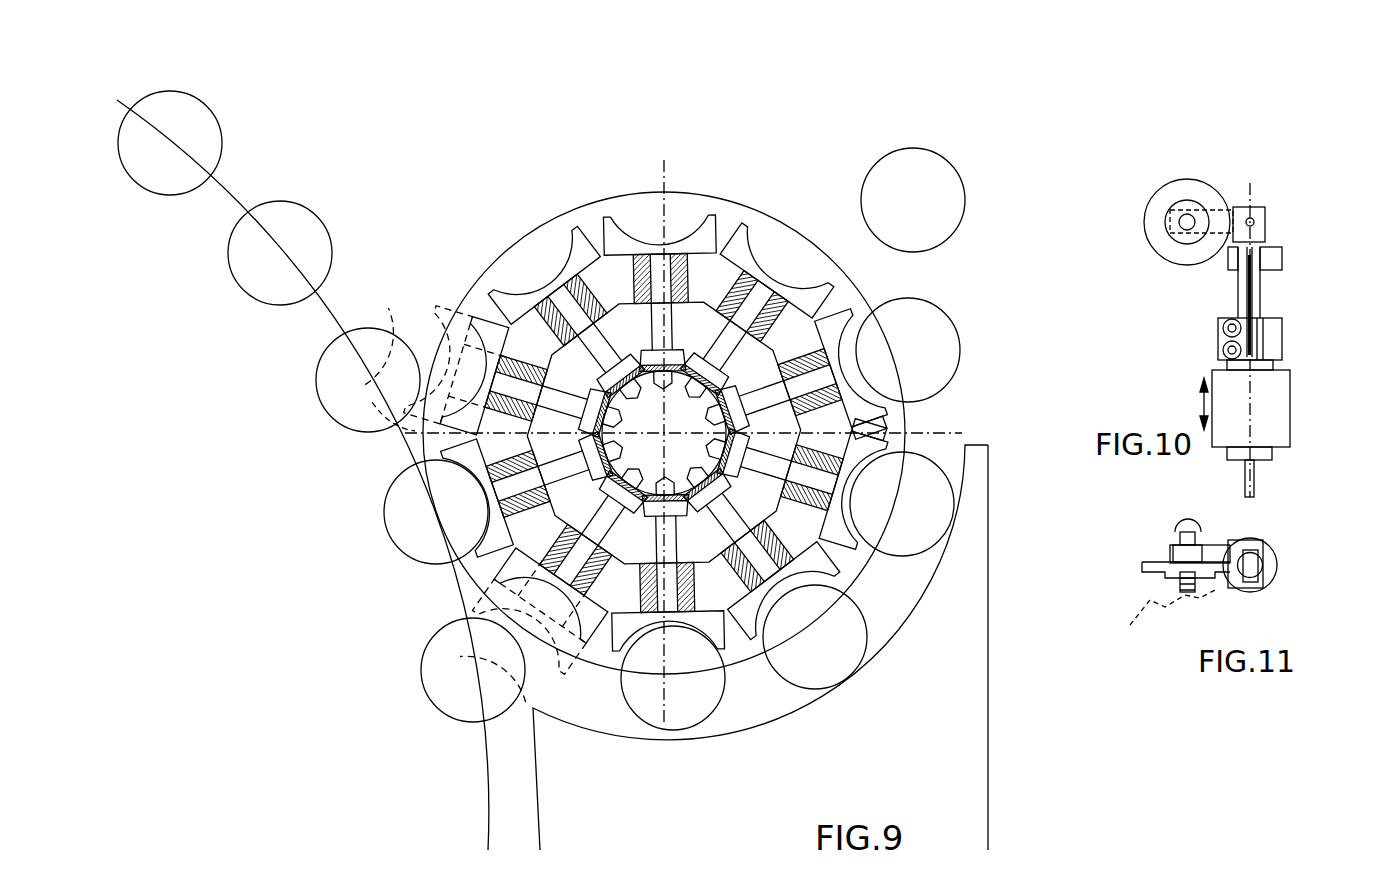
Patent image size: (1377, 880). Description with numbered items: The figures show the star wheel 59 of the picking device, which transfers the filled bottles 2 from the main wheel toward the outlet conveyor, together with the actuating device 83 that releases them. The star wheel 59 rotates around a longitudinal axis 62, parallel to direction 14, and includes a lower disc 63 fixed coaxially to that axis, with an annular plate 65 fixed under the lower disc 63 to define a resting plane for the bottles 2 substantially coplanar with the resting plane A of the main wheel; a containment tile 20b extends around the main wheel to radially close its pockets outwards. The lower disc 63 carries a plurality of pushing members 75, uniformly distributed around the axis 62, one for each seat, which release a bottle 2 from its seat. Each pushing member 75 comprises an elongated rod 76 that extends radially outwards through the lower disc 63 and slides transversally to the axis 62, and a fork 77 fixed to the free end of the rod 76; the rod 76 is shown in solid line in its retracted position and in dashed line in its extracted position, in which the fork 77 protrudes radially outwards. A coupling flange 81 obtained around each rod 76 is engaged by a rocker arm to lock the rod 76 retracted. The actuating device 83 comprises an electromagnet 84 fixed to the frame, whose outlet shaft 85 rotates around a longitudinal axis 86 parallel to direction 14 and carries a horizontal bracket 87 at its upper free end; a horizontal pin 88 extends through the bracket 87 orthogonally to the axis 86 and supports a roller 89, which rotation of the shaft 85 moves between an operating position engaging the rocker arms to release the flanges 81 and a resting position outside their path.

In FIG. 9, the star wheel 59 is at (735, 188).
In FIG. 9, the bottle 2 is at (896, 165).
In FIG. 9, the resting plane A is at (773, 248).
In FIG. 9, the longitudinal axis 62 is at (628, 232).
In FIG. 9, the lower disc 63 is at (843, 300).
In FIG. 9, the annular plate 65 is at (515, 258).
In FIG. 9, the elongated rod 76 is at (505, 385).
In FIG. 9, the fork 77 is at (452, 302).
In FIG. 9, the pushing member 75 is at (400, 438).
In FIG. 9, the coupling flange 81 is at (732, 395).
In FIG. 9, the containment tile 20b is at (963, 767).
In FIG. 10, the actuating device 83 is at (1316, 190).
In FIG. 11, the actuating device 83 is at (1302, 552).
In FIG. 10, the electromagnet 84 is at (1278, 413).
In FIG. 11, the electromagnet 84 is at (1277, 573).
In FIG. 10, the outlet shaft 85 is at (1256, 298).
In FIG. 11, the outlet shaft 85 is at (1258, 585).
In FIG. 10, the longitudinal axis 86 is at (1250, 192).
In FIG. 10, the horizontal bracket 87 is at (1172, 236).
In FIG. 11, the horizontal bracket 87 is at (1213, 548).
In FIG. 10, the horizontal pin 88 is at (1187, 230).
In FIG. 11, the horizontal pin 88 is at (1185, 572).
In FIG. 10, the roller 89 is at (1170, 192).
In FIG. 11, the roller 89 is at (1150, 562).
In FIG. 10, the direction 14 is at (1189, 404).